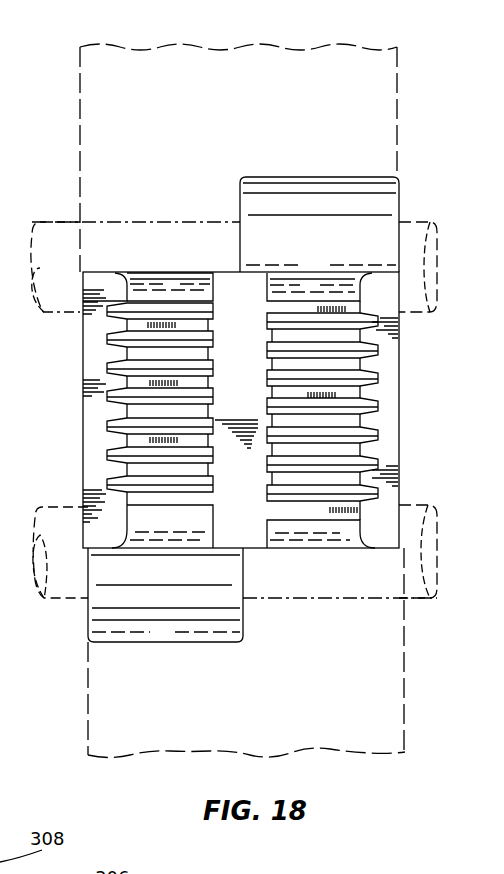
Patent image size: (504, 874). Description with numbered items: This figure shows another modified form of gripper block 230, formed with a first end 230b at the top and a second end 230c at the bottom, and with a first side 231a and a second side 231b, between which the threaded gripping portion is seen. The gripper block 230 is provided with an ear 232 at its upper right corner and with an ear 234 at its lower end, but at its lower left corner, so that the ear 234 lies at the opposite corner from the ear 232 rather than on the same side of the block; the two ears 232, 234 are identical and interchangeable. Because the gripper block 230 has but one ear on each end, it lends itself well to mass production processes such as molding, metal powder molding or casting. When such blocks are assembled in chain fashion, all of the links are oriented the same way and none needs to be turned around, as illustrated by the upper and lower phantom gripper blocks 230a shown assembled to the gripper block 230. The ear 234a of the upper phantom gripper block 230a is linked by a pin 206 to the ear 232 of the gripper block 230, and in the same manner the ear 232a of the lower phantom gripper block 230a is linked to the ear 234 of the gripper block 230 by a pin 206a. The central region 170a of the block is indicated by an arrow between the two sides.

The phantom gripper block 230a is at (243, 75).
The gripper block 230 is at (193, 272).
The first end 230b is at (155, 270).
The second end 230c is at (332, 548).
The first side 231a is at (83, 390).
The second side 231b is at (399, 385).
The ear 232 is at (312, 190).
The ear 232a is at (376, 578).
The ear 234 is at (178, 643).
The ear 234a is at (97, 250).
The pin 206 is at (60, 282).
The pin 206a is at (58, 535).
The central passage 170a is at (250, 522).